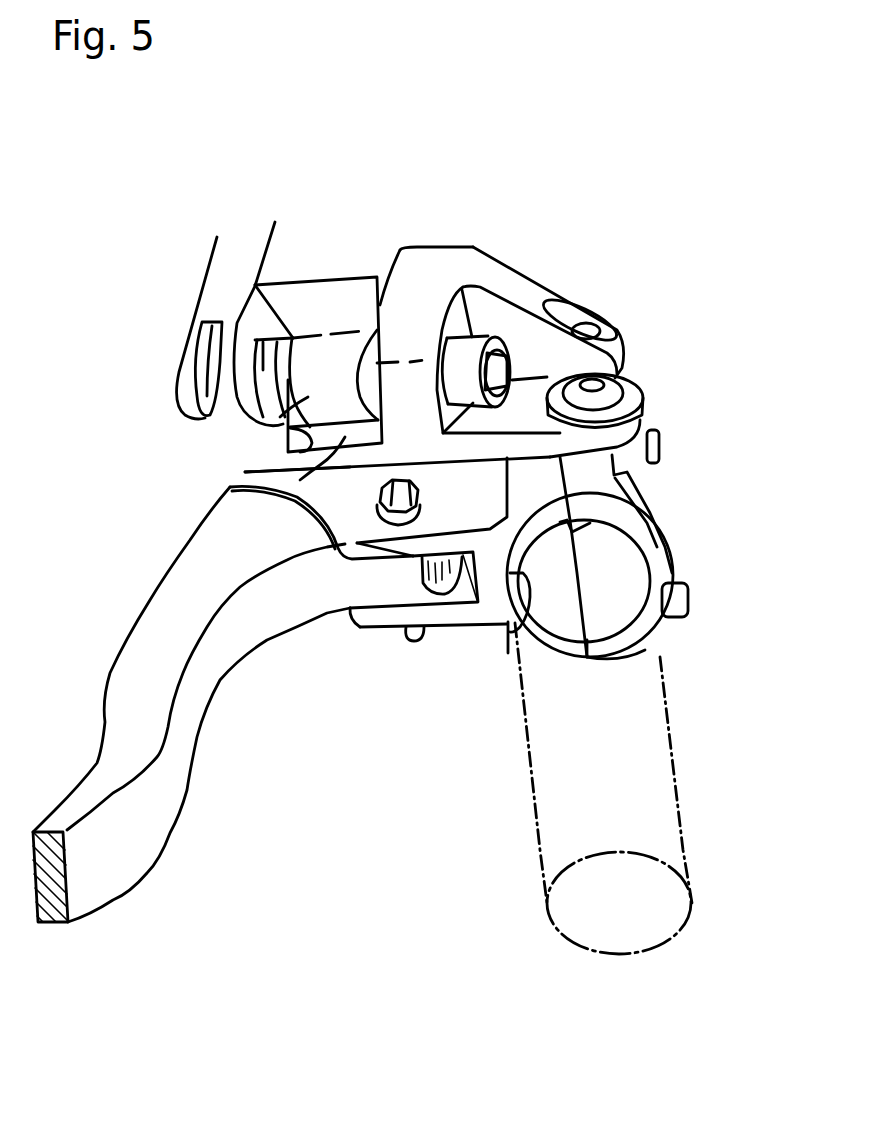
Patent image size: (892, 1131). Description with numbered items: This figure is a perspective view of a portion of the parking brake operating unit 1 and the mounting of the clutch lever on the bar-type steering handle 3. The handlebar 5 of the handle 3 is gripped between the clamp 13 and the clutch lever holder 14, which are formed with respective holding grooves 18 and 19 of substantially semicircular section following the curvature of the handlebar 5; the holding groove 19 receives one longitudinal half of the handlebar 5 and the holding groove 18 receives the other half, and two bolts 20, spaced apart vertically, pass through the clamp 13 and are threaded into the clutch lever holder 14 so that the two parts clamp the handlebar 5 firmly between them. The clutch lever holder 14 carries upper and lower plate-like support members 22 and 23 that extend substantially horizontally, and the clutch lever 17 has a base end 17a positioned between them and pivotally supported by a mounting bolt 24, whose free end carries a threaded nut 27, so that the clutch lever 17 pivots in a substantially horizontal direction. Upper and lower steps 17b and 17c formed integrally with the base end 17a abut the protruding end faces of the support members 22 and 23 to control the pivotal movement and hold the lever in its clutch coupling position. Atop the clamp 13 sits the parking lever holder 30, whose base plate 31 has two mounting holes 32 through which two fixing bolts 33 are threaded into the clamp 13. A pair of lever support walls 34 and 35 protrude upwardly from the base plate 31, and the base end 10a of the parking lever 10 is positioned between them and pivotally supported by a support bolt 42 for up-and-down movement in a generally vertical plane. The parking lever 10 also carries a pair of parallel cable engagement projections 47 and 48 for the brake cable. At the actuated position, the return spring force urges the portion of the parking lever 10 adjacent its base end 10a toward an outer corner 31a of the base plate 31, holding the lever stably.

The brake operating unit 1 is at (197, 270).
The bar-type steering handle 3 is at (688, 750).
The handlebar 5 is at (523, 732).
The parking lever 10 is at (375, 228).
The base end of the parking lever 10a is at (310, 397).
The clamp 13 is at (612, 652).
The clutch lever holder 14 is at (453, 633).
The clutch lever 17 is at (123, 643).
The base end of the clutch lever 17a is at (402, 590).
The upper step 17b is at (313, 521).
The lower step 17c is at (357, 618).
The holding groove of the clamp 18 is at (641, 560).
The holding groove of the clutch lever holder 19 is at (523, 597).
The bolts 20 is at (659, 450).
The upper support member 22 is at (360, 527).
The lower support member 23 is at (385, 605).
The mounting bolt 24 is at (405, 491).
The nut 27 is at (417, 639).
The parking lever holder 30 is at (558, 277).
The base plate 31 is at (248, 476).
The outer corner of the base plate 31a is at (345, 437).
The mounting holes 32 is at (623, 413).
The fixing bolts 33 is at (594, 330).
The lever support wall 34 is at (427, 290).
The lever support wall 35 is at (258, 337).
The support bolt 42 is at (497, 340).
The cable engagement projection 47 is at (223, 383).
The cable engagement projection 48 is at (190, 353).